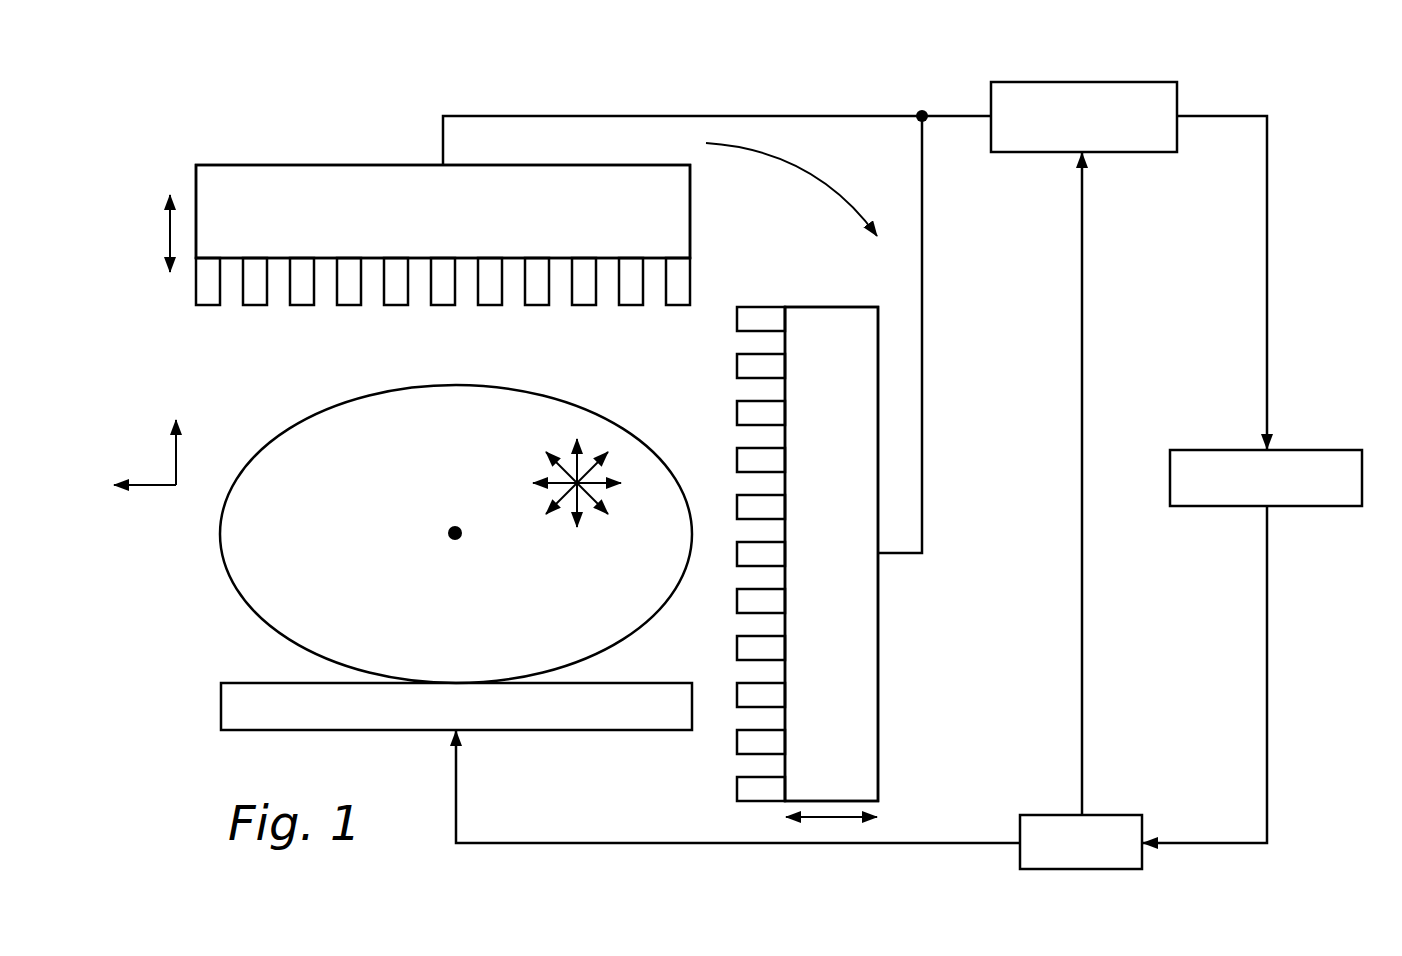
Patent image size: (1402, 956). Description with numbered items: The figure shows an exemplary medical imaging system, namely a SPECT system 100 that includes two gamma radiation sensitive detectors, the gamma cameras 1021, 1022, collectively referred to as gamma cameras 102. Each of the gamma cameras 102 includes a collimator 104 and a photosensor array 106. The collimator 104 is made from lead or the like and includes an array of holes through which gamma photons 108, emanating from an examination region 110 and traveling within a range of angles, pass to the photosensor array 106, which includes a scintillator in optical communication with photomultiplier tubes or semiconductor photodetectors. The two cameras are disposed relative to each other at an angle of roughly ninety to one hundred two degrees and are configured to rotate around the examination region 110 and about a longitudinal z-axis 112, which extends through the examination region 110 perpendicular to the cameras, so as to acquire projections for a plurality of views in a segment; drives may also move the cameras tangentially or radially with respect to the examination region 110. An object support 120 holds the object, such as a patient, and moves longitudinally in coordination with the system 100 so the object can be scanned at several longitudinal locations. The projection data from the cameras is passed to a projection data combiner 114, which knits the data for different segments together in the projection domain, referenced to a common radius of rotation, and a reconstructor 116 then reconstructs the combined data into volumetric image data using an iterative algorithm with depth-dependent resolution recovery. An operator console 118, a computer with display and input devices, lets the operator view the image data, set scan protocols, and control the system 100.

The SPECT system 100 is at (194, 104).
The gamma cameras 102 is at (832, 98).
The first gamma camera 1021 is at (364, 150).
The second gamma camera 1022 is at (907, 641).
The collimator 104 is at (690, 270).
The photosensor array 106 is at (690, 215).
The gamma photons 108 is at (521, 459).
The examination region 110 is at (264, 400).
The z-axis 112 is at (449, 532).
The projection data combiner 114 is at (1130, 152).
The reconstructor 116 is at (1318, 506).
The operator console 118 is at (1110, 815).
The object support 120 is at (221, 705).